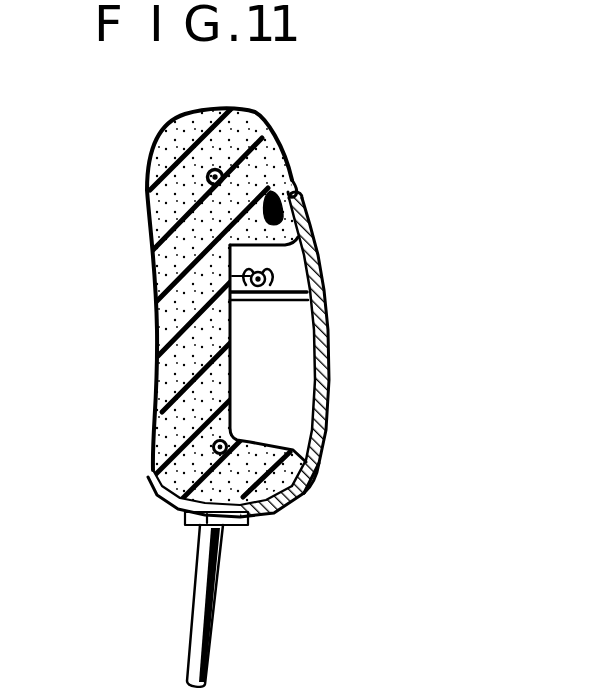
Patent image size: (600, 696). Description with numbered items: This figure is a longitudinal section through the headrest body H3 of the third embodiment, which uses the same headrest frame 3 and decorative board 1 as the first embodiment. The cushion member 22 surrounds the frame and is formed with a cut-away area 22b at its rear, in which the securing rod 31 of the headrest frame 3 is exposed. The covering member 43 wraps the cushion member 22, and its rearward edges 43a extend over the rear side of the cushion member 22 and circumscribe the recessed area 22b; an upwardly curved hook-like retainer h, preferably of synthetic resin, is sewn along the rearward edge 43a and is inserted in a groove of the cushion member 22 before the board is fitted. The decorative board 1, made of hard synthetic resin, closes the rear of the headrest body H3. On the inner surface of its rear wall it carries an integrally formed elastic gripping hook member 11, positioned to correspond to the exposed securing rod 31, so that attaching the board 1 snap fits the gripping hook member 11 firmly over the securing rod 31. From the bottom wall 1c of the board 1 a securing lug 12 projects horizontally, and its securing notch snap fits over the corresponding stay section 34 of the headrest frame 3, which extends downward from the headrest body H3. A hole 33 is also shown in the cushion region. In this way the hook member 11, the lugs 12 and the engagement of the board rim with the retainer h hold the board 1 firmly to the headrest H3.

The decorative board 1 is at (330, 403).
The bottom wall 1c is at (270, 520).
The headrest frame 3 is at (224, 174).
The gripping hook member 11 is at (300, 266).
The securing lug 12 is at (188, 525).
The cushion member 22 is at (153, 262).
The cut-away area 22b is at (287, 358).
The securing rod 31 is at (308, 246).
The pin hole 33 is at (212, 446).
The stay section 34 is at (218, 610).
The covering member 43 is at (157, 398).
The rearward edge 43a is at (305, 475).
The hook-like retainer h is at (304, 224).
The headrest body H3 is at (140, 199).